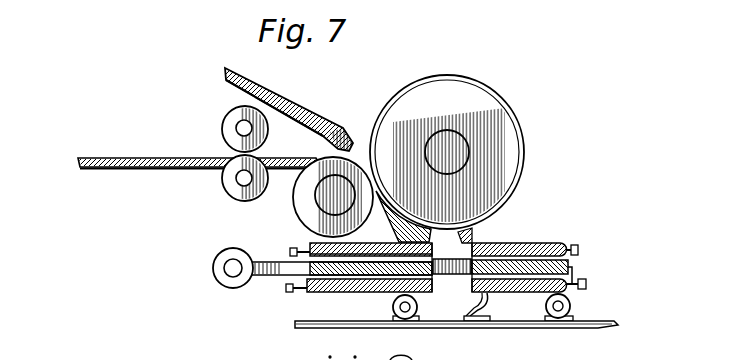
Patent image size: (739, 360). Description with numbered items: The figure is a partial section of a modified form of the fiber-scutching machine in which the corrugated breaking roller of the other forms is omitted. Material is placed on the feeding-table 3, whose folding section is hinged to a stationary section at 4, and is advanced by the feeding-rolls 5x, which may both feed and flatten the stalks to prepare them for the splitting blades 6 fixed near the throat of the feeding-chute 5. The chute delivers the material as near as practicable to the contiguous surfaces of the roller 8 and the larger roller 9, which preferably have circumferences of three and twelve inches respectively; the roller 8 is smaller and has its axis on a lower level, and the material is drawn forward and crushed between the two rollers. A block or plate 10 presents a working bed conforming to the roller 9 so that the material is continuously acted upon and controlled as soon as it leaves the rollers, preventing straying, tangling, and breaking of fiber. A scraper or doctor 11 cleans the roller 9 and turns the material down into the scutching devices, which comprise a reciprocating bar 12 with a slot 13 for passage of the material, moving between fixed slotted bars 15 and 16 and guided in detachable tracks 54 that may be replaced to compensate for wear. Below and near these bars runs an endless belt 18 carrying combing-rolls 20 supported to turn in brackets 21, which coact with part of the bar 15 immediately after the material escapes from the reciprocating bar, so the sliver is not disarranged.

The feeding-table 3 is at (182, 167).
The hinge of feeding-table 4 is at (199, 175).
The feeding-chute 5 is at (289, 109).
The feeding-rolls 5x is at (226, 155).
The splitting blades 6 is at (347, 137).
The roller 8 is at (333, 197).
The roller 9 is at (471, 89).
The block or plate 10 is at (397, 217).
The scraper or doctor 11 is at (474, 240).
The reciprocating bar 12 is at (570, 262).
The slot 13 is at (449, 277).
The fixed bar or plate 15 is at (322, 257).
The fixed bar or plate 16 is at (562, 238).
The endless belt 18 is at (456, 334).
The combing-roll 20 is at (387, 308).
The bracket 21 is at (545, 323).
The track 54 is at (590, 285).